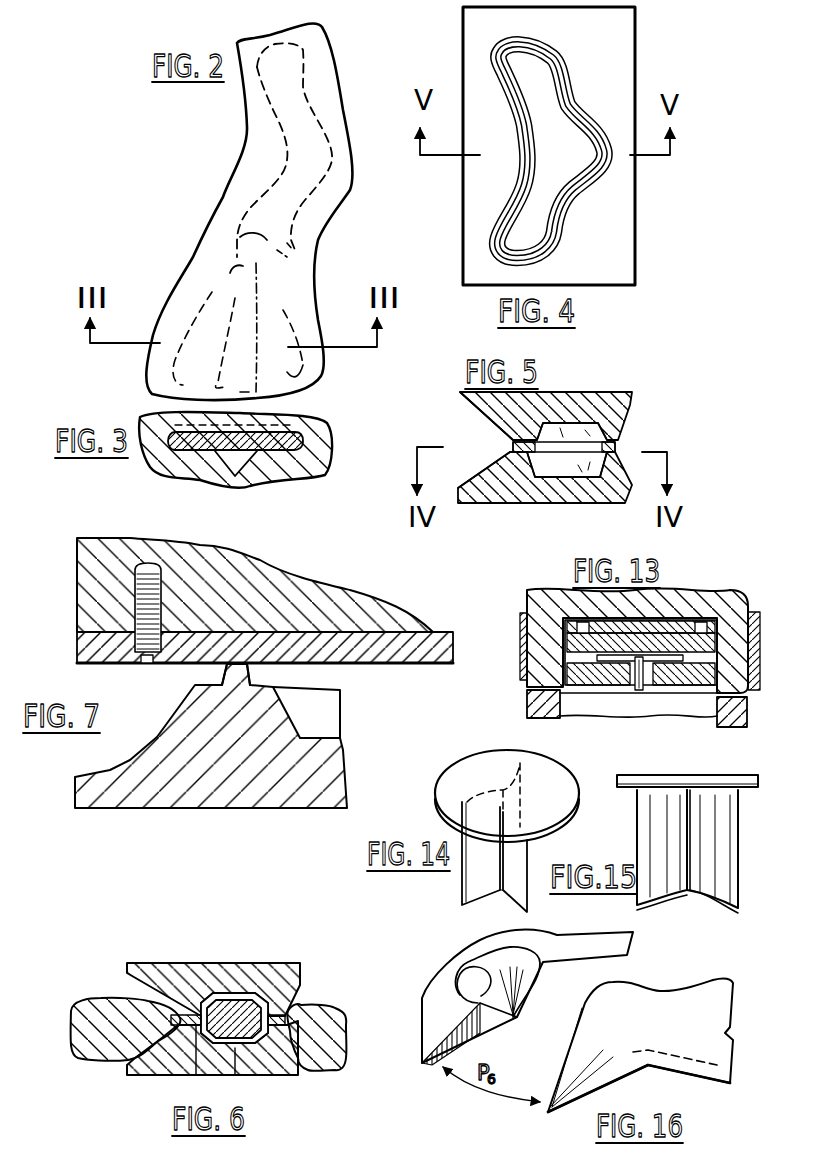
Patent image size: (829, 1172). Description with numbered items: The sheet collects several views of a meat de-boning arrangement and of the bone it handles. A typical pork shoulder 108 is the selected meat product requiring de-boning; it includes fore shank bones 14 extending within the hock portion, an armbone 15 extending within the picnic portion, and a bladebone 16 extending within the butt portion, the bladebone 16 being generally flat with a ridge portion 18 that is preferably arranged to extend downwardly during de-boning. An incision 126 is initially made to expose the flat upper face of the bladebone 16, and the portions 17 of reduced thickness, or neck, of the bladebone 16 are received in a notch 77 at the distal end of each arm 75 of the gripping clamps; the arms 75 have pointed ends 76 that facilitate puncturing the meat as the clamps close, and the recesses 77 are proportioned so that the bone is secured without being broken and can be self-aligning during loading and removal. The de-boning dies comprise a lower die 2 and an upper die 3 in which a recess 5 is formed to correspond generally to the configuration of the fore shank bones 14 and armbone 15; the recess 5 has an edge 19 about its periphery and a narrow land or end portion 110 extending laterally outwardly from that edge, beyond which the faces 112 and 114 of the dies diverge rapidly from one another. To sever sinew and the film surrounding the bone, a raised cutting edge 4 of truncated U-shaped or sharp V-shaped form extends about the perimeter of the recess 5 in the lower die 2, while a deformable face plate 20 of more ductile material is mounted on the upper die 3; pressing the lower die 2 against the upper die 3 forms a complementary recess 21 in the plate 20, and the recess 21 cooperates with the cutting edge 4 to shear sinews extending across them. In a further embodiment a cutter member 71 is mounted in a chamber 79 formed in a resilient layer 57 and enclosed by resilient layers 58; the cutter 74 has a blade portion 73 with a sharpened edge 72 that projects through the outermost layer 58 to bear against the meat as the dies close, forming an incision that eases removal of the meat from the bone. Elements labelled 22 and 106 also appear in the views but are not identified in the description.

In FIG. 4, the lower die 2 is at (617, 277).
In FIG. 7, the lower die 2 is at (220, 775).
In FIG. 6, the lower die 2 is at (232, 1053).
In FIG. 5, the upper die 3 is at (633, 400).
In FIG. 7, the upper die 3 is at (350, 596).
In FIG. 6, the upper die 3 is at (263, 977).
In FIG. 4, the raised cutting edge 4 is at (570, 98).
In FIG. 5, the raised cutting edge 4 is at (618, 452).
In FIG. 7, the raised cutting edge 4 is at (220, 673).
In FIG. 6, the raised cutting edge 4 is at (182, 1025).
In FIG. 4, the recess 5 is at (548, 188).
In FIG. 5, the recess 5 is at (563, 430).
In FIG. 6, the recess 5 is at (233, 963).
In FIG. 2, the fore shank bones 14 is at (297, 93).
In FIG. 2, the armbone 15 is at (312, 192).
In FIG. 2, the bladebone 16 is at (297, 383).
In FIG. 2, the portions of reduced thickness 17 is at (236, 266).
In FIG. 3, the ridge portion 18 is at (250, 487).
In FIG. 4, the edge 19 is at (603, 170).
In FIG. 5, the edge 19 is at (622, 462).
In FIG. 6, the edge 19 is at (200, 1030).
In FIG. 5, the face plate 20 is at (517, 448).
In FIG. 7, the face plate 20 is at (403, 655).
In FIG. 7, the recess 21 is at (236, 662).
In FIG. 7, the screw 22 is at (133, 602).
In FIG. 13, the resilient layer 57 is at (565, 662).
In FIG. 13, the resilient layers 58 is at (520, 632).
In FIG. 13, the cutter member 71 is at (625, 683).
In FIG. 13, the sharpened edge 72 is at (636, 690).
In FIG. 15, the sharpened edge 72 is at (672, 896).
In FIG. 13, the blade portion 73 is at (647, 690).
In FIG. 14, the blade portion 73 is at (456, 890).
In FIG. 13, the cutter 74 is at (683, 623).
In FIG. 14, the cutter 74 is at (457, 772).
In FIG. 15, the cutter 74 is at (712, 775).
In FIG. 16, the arms 75 is at (588, 952).
In FIG. 16, the pointed ends 76 is at (432, 1025).
In FIG. 16, the notch 77 is at (463, 973).
In FIG. 13, the chamber 79 is at (727, 638).
In FIG. 5, the gasket channel 106 is at (597, 423).
In FIG. 2, the pork shoulder 108 is at (227, 173).
In FIG. 4, the narrow end portion 110 is at (565, 210).
In FIG. 5, the narrow end portion 110 is at (510, 492).
In FIG. 5, the face 112 is at (508, 422).
In FIG. 4, the face 114 is at (617, 28).
In FIG. 5, the face 114 is at (492, 477).
In FIG. 2, the incision 126 is at (257, 305).
In FIG. 3, the incision 126 is at (283, 420).